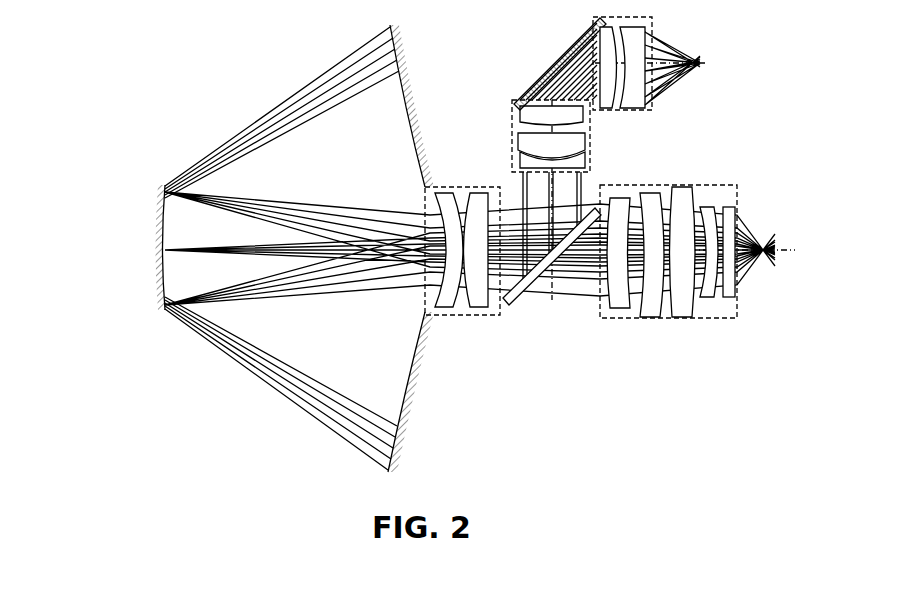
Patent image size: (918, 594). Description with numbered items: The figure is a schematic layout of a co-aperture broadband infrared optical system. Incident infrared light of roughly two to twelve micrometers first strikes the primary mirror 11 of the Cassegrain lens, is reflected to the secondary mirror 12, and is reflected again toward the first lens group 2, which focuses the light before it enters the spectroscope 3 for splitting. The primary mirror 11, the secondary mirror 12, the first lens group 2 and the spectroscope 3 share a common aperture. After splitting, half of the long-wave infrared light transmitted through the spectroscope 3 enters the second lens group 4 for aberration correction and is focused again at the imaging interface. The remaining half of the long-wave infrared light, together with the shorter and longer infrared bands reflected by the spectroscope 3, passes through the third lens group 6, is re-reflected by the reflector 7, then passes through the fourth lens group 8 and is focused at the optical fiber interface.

The first lens group 2 is at (455, 318).
The spectroscope 3 is at (548, 292).
The second lens group 4 is at (640, 318).
The third lens group 6 is at (590, 128).
The reflector 7 is at (548, 62).
The fourth lens group 8 is at (650, 98).
The primary mirror 11 is at (410, 410).
The secondary mirror 12 is at (160, 268).